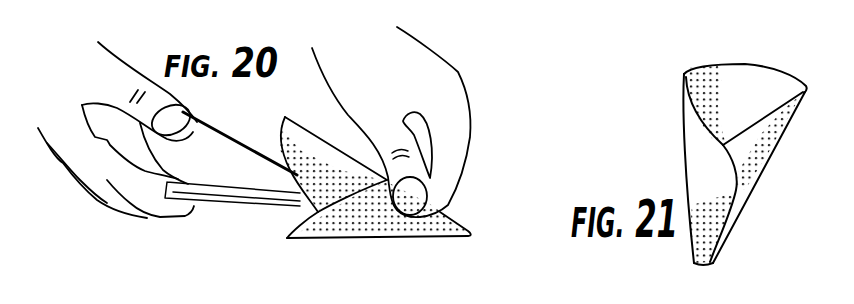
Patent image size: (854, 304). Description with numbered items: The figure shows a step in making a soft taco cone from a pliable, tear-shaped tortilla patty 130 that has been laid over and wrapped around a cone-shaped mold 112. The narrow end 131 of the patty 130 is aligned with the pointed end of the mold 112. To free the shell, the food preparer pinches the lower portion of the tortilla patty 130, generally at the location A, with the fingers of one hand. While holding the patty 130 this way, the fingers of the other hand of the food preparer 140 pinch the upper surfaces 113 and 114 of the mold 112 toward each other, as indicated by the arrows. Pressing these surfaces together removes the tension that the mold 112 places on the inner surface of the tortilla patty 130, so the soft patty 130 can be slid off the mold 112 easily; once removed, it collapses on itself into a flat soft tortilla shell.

In FIG. 20, the other hand of the food preparer 140 is at (113, 210).
In FIG. 20, the upper surface of the mold 114 is at (203, 130).
In FIG. 20, the mold 112 is at (250, 208).
In FIG. 20, the upper surface of the mold 113 is at (205, 205).
In FIG. 20, the tortilla patty 130 is at (415, 250).
In FIG. 21, the tortilla patty 130 is at (740, 182).
In FIG. 20, the narrow end of the patty 131 is at (471, 236).
In FIG. 21, the narrow end of the patty 131 is at (713, 263).
In FIG. 20, the pinched lower portion A is at (434, 215).